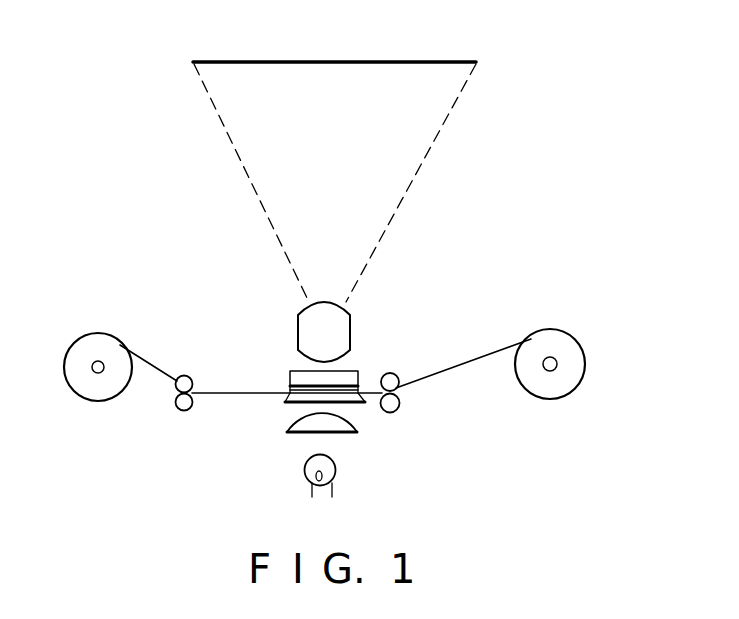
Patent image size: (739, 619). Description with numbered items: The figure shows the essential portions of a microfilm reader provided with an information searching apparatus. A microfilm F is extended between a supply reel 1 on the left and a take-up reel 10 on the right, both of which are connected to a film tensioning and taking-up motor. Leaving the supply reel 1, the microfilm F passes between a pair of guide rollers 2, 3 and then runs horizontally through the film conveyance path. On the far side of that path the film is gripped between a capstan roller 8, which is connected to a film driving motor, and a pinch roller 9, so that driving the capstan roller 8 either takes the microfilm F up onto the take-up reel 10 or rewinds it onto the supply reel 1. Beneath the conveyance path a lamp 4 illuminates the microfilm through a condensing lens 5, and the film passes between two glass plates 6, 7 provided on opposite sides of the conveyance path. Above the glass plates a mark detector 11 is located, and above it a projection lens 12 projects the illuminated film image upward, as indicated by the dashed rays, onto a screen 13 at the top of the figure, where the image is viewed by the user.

The supply reel 1 is at (92, 398).
The guide roller 2 is at (181, 410).
The guide roller 3 is at (182, 377).
The lamp 4 is at (336, 465).
The condensing lens 5 is at (308, 424).
The glass plate 6 is at (290, 401).
The glass plate 7 is at (291, 387).
The capstan roller 8 is at (392, 405).
The pinch roller 9 is at (390, 380).
The take-up reel 10 is at (555, 397).
The mark detector 11 is at (303, 377).
The projection lens 12 is at (340, 330).
The screen 13 is at (438, 66).
The microfilm F is at (500, 347).